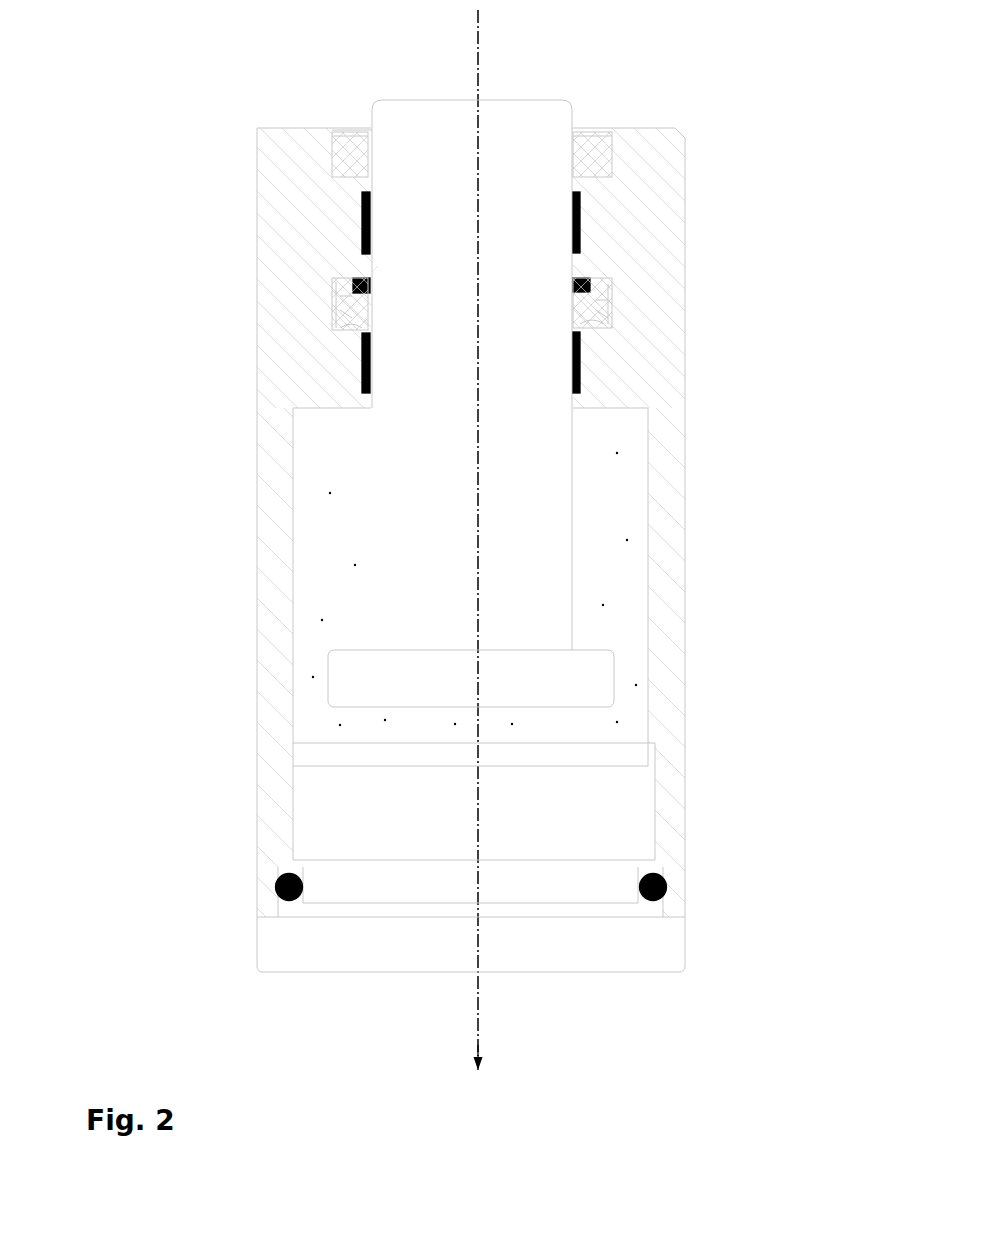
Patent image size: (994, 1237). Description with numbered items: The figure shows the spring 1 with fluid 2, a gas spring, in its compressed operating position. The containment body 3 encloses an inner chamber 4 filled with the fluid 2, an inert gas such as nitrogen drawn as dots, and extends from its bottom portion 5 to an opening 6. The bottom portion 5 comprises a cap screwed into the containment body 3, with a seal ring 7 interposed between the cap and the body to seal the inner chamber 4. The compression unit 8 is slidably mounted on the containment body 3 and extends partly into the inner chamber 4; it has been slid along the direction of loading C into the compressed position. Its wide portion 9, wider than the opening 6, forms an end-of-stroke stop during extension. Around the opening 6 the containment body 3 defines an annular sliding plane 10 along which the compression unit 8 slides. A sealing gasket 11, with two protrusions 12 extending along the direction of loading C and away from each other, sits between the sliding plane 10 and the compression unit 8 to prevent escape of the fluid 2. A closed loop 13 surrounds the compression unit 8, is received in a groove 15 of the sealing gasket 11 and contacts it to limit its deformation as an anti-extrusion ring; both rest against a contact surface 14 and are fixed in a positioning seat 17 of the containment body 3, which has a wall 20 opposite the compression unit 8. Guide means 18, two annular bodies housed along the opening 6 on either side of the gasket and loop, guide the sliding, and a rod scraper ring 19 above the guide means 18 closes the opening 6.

The spring with fluid 1 is at (155, 71).
The fluid 2 is at (557, 722).
The containment body 3 is at (658, 428).
The inner chamber 4 is at (328, 576).
The bottom portion 5 is at (542, 940).
The opening 6 is at (575, 126).
The seal ring 7 is at (277, 882).
The compression unit 8 is at (368, 115).
The wide portion 9 is at (572, 665).
The sliding plane 10 is at (371, 270).
The sealing gasket 11 is at (343, 313).
The protrusions 12 is at (360, 328).
The closed loop 13 is at (357, 277).
The contact surface 14 is at (343, 275).
The groove 15 is at (578, 298).
The positioning seat 17 is at (328, 317).
The guide means 18 is at (362, 225).
The rod scraper ring 19 is at (337, 128).
The wall 20 is at (327, 300).
The direction of loading C is at (478, 55).